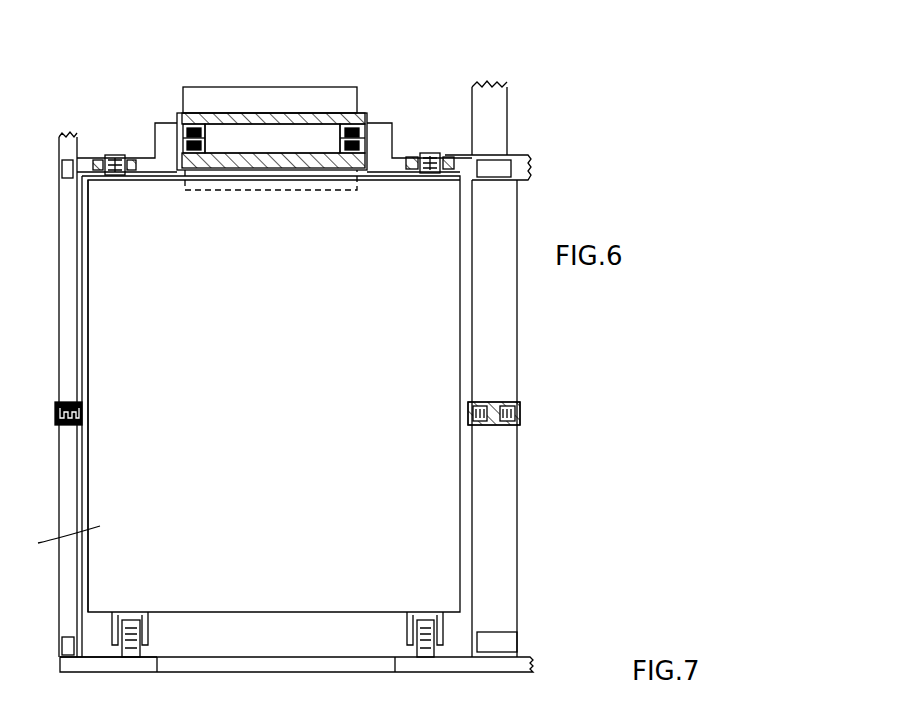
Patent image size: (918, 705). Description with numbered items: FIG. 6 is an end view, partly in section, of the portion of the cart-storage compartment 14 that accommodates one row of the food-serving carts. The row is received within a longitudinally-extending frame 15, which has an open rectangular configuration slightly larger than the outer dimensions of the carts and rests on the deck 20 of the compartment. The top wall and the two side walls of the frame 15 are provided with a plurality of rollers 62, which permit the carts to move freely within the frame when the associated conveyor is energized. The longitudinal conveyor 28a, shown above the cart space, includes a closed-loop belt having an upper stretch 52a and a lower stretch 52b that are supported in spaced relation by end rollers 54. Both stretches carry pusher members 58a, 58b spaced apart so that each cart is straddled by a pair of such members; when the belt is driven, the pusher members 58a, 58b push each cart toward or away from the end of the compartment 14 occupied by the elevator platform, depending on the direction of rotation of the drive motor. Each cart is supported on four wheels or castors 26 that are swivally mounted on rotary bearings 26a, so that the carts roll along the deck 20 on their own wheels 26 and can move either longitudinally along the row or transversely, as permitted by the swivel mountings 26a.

The cart-storage compartment 14 is at (352, 665).
The frame 15 is at (60, 284).
The deck 20 is at (262, 666).
The wheels or castors 26 is at (142, 640).
The rotary bearings 26a is at (138, 612).
The longitudinal conveyor 28a is at (269, 150).
The upper stretch 52a is at (248, 120).
The lower stretch 52b is at (272, 162).
The end rollers 54 is at (182, 122).
The pusher member 58a is at (290, 98).
The pusher member 58b is at (335, 192).
The rollers 62 is at (112, 156).